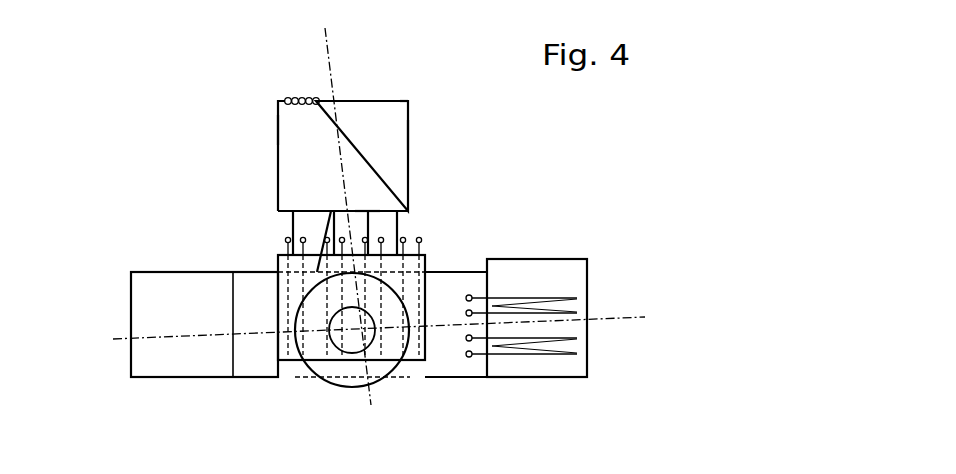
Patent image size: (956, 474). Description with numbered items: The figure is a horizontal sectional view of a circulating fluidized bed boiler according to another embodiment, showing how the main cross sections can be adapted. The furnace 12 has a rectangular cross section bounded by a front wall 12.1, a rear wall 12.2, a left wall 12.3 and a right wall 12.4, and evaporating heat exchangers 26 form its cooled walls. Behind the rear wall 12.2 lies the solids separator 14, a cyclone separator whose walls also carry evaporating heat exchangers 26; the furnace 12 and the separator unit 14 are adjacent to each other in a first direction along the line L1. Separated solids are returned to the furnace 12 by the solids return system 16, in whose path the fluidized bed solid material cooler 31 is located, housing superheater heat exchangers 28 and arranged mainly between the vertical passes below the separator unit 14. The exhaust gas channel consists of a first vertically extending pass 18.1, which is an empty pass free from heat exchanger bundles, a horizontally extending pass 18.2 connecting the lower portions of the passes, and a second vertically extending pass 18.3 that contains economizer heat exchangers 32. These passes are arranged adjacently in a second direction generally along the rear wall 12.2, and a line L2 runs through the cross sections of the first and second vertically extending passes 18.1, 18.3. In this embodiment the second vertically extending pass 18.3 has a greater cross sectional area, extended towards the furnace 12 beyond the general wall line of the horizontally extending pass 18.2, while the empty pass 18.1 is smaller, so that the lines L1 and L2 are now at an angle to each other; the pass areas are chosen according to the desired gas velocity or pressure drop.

The furnace 12 is at (402, 156).
The front wall 12.1 is at (409, 100).
The rear wall 12.2 is at (365, 210).
The left wall 12.3 is at (411, 135).
The right wall 12.4 is at (275, 130).
The solids separator 14 is at (347, 367).
The solids return system 16 is at (405, 228).
The first vertically extending pass 18.1 is at (126, 251).
The horizontally extending pass 18.2 is at (427, 366).
The second vertically extending pass 18.3 is at (594, 251).
The evaporating heat exchangers 26 is at (290, 99).
The superheater heat exchangers 28 is at (336, 267).
The fluidized bed solid material cooler 31 is at (425, 265).
The economizer heat exchangers 32 is at (552, 315).
The line L1 is at (327, 216).
The line L2 is at (379, 310).